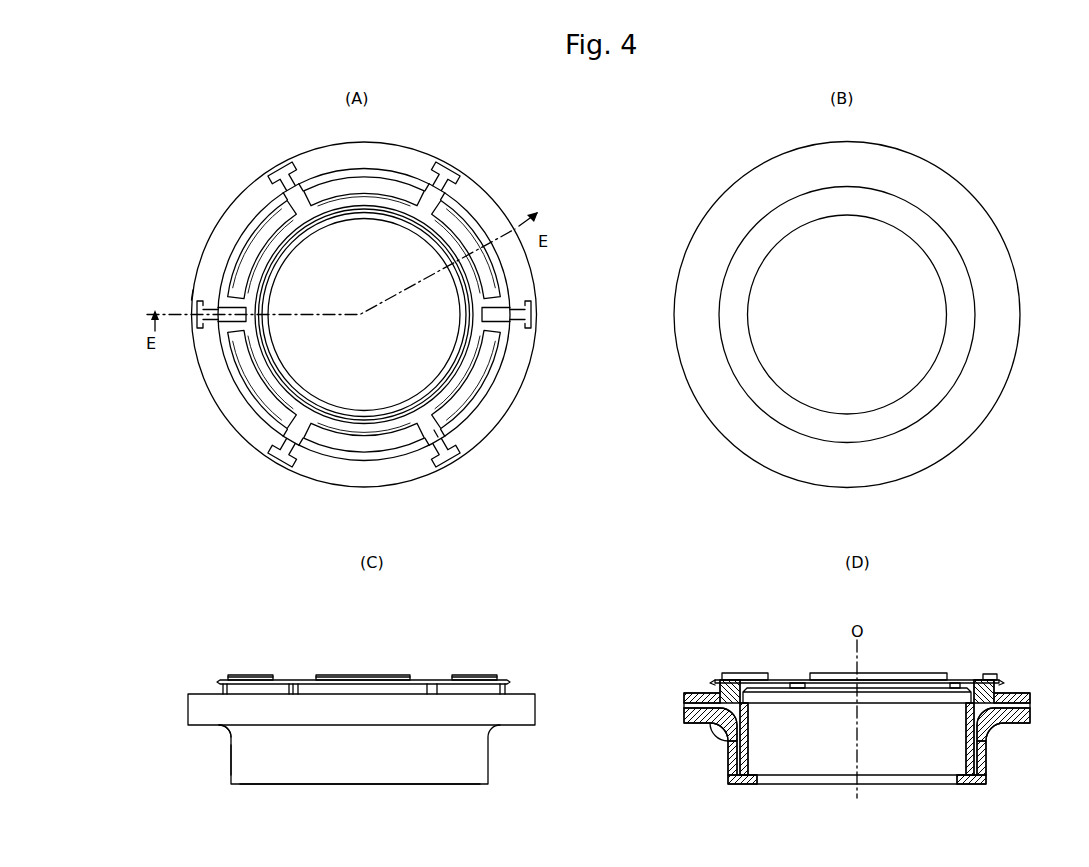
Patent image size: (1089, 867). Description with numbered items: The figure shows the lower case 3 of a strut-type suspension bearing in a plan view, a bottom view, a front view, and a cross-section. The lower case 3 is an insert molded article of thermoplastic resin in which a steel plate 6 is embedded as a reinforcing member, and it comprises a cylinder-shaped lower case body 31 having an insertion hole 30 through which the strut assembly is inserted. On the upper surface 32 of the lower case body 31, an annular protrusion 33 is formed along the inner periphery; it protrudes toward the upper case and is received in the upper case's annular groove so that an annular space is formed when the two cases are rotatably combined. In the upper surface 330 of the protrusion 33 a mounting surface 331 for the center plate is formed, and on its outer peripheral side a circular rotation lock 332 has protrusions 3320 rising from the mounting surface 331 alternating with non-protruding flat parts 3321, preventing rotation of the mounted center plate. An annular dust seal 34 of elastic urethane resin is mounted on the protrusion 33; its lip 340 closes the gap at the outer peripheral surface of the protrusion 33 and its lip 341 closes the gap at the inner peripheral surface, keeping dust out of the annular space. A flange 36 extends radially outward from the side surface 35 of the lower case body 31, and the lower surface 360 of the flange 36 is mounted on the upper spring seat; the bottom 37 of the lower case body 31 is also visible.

The lower case 3 is at (564, 113).
The steel plate 6 is at (700, 707).
The insertion hole 30 is at (303, 269).
The lower case body 31 is at (487, 190).
The upper surface 32 is at (404, 158).
The protrusion 33 is at (442, 413).
The dust seal 34 is at (531, 313).
The side surface 35 is at (230, 765).
The flange 36 is at (197, 247).
The bottom 37 is at (348, 786).
The upper surface 330 is at (412, 433).
The mounting surface 331 is at (493, 332).
The rotation lock 332 is at (241, 393).
The lip 340 is at (717, 682).
The lip 341 is at (777, 687).
The lower surface 360 is at (193, 728).
The protrusions 3320 is at (363, 452).
The flat parts 3321 is at (440, 447).